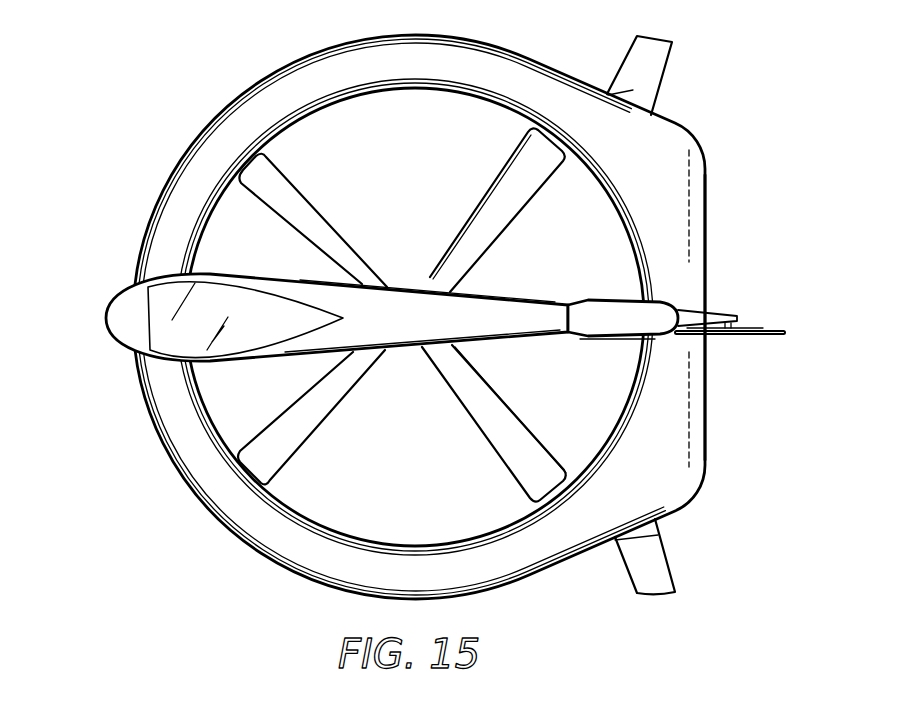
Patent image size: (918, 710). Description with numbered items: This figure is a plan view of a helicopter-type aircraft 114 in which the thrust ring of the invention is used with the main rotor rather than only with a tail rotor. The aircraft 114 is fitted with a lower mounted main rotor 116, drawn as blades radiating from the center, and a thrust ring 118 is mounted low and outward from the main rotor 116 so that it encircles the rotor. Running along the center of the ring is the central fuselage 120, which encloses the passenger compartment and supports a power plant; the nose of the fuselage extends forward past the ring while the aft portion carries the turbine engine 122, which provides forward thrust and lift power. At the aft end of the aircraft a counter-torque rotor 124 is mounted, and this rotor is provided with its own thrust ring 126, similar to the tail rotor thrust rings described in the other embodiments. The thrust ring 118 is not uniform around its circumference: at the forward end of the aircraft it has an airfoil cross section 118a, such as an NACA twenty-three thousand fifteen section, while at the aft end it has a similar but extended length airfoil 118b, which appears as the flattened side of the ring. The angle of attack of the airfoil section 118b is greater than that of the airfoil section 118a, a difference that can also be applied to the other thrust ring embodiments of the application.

The aircraft 114 is at (291, 611).
The main rotor 116 is at (494, 424).
The thrust ring 118 is at (288, 93).
The airfoil cross section 118a is at (151, 378).
The extended length airfoil 118b is at (683, 220).
The central fuselage 120 is at (348, 331).
The turbine engine 122 is at (612, 312).
The counter-torque rotor 124 is at (748, 325).
The thrust ring 126 is at (763, 336).